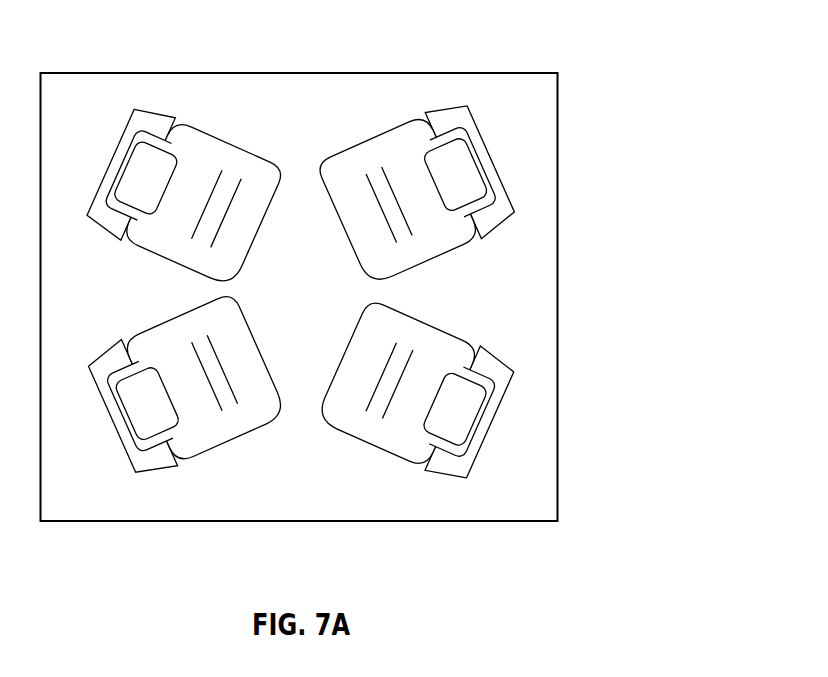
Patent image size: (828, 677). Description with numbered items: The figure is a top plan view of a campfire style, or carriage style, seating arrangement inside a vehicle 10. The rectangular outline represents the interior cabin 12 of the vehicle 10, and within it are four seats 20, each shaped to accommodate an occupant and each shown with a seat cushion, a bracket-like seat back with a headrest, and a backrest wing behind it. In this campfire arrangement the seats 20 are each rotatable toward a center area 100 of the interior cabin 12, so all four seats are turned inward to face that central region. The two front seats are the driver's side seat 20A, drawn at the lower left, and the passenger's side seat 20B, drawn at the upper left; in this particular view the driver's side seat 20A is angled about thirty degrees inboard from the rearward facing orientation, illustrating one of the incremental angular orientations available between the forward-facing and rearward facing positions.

The vehicle 10 is at (373, 297).
The interior cabin 12 is at (312, 125).
The seats 20 is at (538, 180).
The driver's side seat 20A is at (158, 497).
The passenger's side seat 20B is at (210, 92).
The center area 100 is at (320, 310).